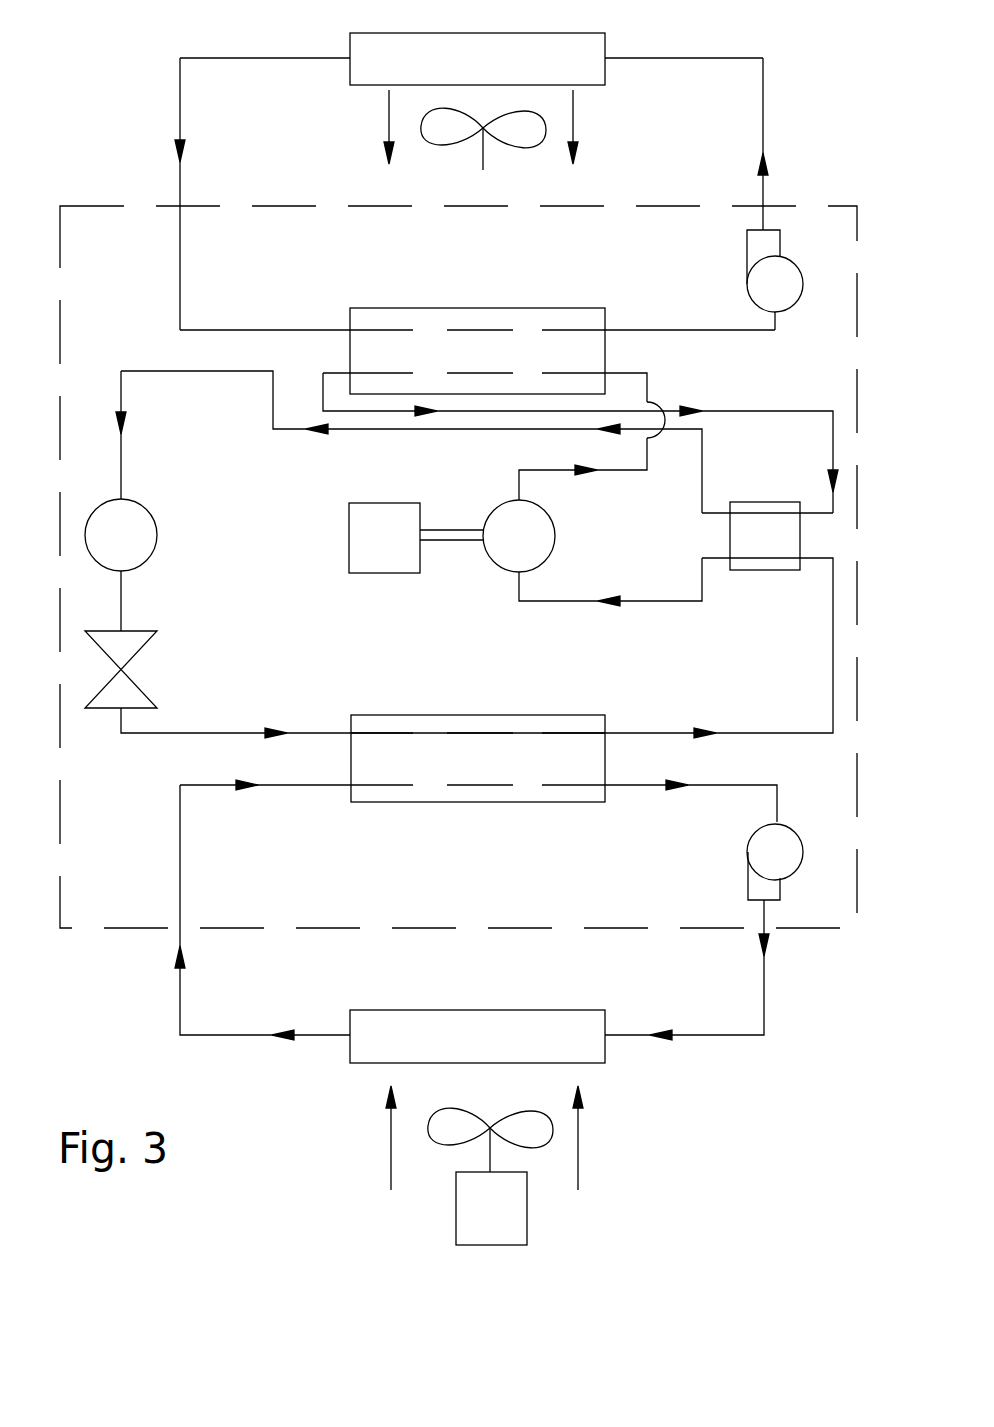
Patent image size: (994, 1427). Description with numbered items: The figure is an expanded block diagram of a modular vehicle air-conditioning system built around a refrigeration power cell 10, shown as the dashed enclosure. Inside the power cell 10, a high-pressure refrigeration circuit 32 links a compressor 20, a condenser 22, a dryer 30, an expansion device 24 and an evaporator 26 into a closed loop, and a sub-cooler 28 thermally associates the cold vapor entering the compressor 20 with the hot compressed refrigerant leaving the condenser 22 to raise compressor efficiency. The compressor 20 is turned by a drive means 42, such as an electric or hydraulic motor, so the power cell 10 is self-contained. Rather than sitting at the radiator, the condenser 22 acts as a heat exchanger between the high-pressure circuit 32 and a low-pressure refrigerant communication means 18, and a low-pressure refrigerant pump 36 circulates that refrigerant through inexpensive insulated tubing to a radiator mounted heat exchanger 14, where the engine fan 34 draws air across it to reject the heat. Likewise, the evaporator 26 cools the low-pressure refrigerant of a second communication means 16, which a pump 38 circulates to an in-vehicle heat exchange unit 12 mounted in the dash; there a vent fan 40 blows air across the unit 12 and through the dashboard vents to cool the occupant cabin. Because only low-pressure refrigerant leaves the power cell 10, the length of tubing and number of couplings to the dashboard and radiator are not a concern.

The refrigeration power cell 10 is at (146, 206).
The in-vehicle heat exchange unit 12 is at (596, 1010).
The radiator mounted heat exchanger 14 is at (607, 44).
The low-pressure refrigerant communication means 16 is at (808, 1014).
The low-pressure refrigerant communication means 18 is at (782, 111).
The compressor 20 is at (488, 514).
The condenser 22 is at (372, 308).
The expansion device 24 is at (146, 630).
The evaporator 26 is at (597, 715).
The sub-cooler 28 is at (765, 500).
The dryer 30 is at (142, 505).
The high-pressure refrigeration circuit 32 is at (118, 368).
The engine fan 34 is at (536, 148).
The low-pressure refrigerant pump 36 is at (800, 296).
The pump 38 is at (748, 852).
The vent fan 40 is at (527, 1226).
The drive means 42 is at (386, 575).